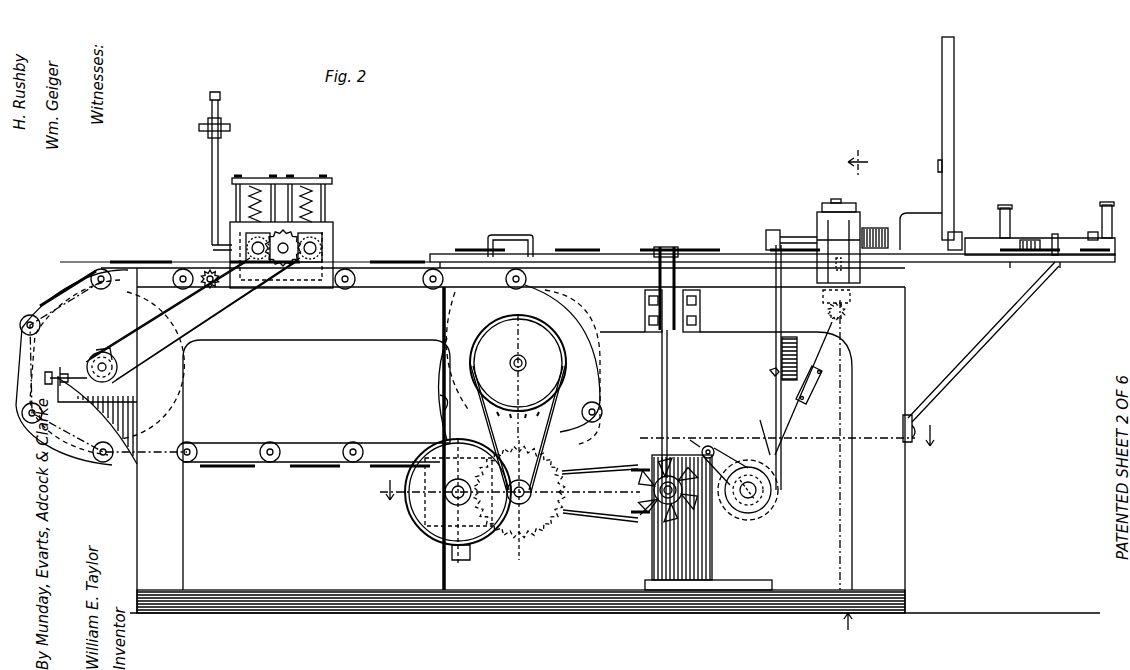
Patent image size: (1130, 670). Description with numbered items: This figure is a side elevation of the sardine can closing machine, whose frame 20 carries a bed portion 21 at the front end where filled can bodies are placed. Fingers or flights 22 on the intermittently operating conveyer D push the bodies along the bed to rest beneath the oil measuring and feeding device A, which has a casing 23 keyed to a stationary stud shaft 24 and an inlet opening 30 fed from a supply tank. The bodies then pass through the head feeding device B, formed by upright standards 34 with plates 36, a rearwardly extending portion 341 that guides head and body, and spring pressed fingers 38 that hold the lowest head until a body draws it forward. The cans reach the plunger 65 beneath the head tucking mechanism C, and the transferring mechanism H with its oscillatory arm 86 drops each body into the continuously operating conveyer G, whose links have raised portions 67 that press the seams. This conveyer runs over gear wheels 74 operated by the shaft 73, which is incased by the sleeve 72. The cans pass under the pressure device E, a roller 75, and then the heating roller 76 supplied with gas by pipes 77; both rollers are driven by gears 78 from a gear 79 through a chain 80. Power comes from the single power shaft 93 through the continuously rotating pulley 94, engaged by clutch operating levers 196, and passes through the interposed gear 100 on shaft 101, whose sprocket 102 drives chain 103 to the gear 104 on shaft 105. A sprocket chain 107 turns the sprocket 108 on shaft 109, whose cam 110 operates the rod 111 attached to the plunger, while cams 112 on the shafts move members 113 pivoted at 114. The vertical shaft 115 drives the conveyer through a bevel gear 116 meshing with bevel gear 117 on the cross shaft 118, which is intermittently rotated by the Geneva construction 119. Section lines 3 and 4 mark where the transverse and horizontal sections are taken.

The frame 20 is at (182, 417).
The bed portion 21 is at (1108, 258).
The fingers or flights 22 is at (440, 254).
The casing 23 is at (1030, 240).
The stationary stud shaft 24 is at (1092, 232).
The inlet opening 30 is at (1104, 205).
The upright standards 34 is at (954, 130).
The plates 36 is at (942, 142).
The spring pressed fingers 38 is at (948, 237).
The rearwardly extending portion 341 is at (921, 222).
The section line 3— 3 is at (854, 390).
The section line 4— 4 is at (659, 463).
The plunger 65 is at (852, 300).
The raised portions 67 is at (82, 266).
The sleeve 72 is at (90, 358).
The shaft 73 is at (103, 352).
The gear wheels 74 is at (70, 447).
The pressure roller 75 is at (336, 246).
The fusing or heating roller 76 is at (240, 190).
The gas pipes 77 is at (211, 190).
The gears 78 is at (246, 248).
The gear 79 is at (295, 262).
The chain 80 is at (218, 315).
The oscillatory arm 86 is at (510, 236).
The power shaft 93 is at (455, 505).
The pulley 94 is at (430, 515).
The interposed gear 100 is at (548, 520).
The shaft 101 is at (533, 494).
The sprocket 102 is at (529, 478).
The chain 103 is at (540, 452).
The gear 104 is at (518, 377).
The shaft 105 is at (526, 364).
The sprocket chain 107 is at (612, 515).
The sprocket 108 is at (766, 427).
The shaft 109 is at (760, 492).
The cam 110 is at (780, 487).
The rod 111 is at (792, 410).
The cams 112 is at (768, 505).
The members 113 is at (783, 450).
The pivot 114 is at (770, 375).
The vertical shaft 115 is at (668, 366).
The bevel gear 116 is at (655, 476).
The bevel gear 117 is at (650, 510).
The cross shaft 118 is at (654, 491).
The Geneva construction 119 is at (712, 440).
The clutch operating levers 196 is at (442, 410).
The oil measuring and feeding device A is at (1054, 236).
The head feeding device B is at (917, 125).
The head tucking mechanism C is at (873, 236).
The endless intermittently operating conveyer D is at (630, 252).
The pressure device E is at (367, 203).
The continuously operating die block conveyer G is at (103, 268).
The transferring mechanism H is at (530, 236).